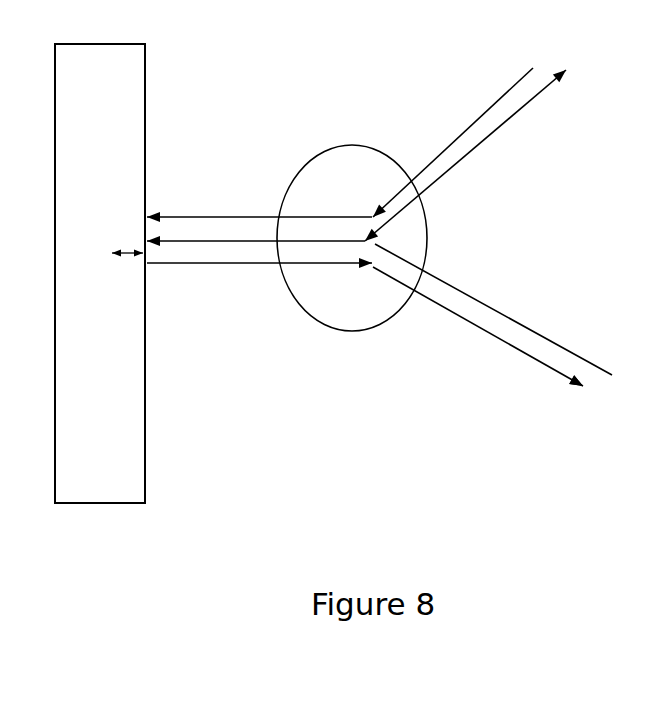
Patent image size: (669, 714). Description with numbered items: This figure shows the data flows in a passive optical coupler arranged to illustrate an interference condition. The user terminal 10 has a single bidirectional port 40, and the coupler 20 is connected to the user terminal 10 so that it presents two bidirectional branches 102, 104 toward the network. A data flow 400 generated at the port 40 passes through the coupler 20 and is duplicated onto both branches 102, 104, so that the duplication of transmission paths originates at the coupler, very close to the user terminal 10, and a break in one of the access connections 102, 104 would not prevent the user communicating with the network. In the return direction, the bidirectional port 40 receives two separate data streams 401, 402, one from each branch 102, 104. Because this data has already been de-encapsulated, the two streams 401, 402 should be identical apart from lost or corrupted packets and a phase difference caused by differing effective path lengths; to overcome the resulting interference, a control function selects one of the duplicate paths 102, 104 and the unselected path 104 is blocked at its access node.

The user terminal 10 is at (100, 299).
The coupler 20 is at (352, 201).
The bidirectional port 40 is at (117, 232).
The data flow 400 is at (259, 292).
The data stream 401 is at (492, 315).
The data stream 402 is at (356, 157).
The bidirectional branch 102 is at (544, 57).
The bidirectional branch 104 is at (610, 394).